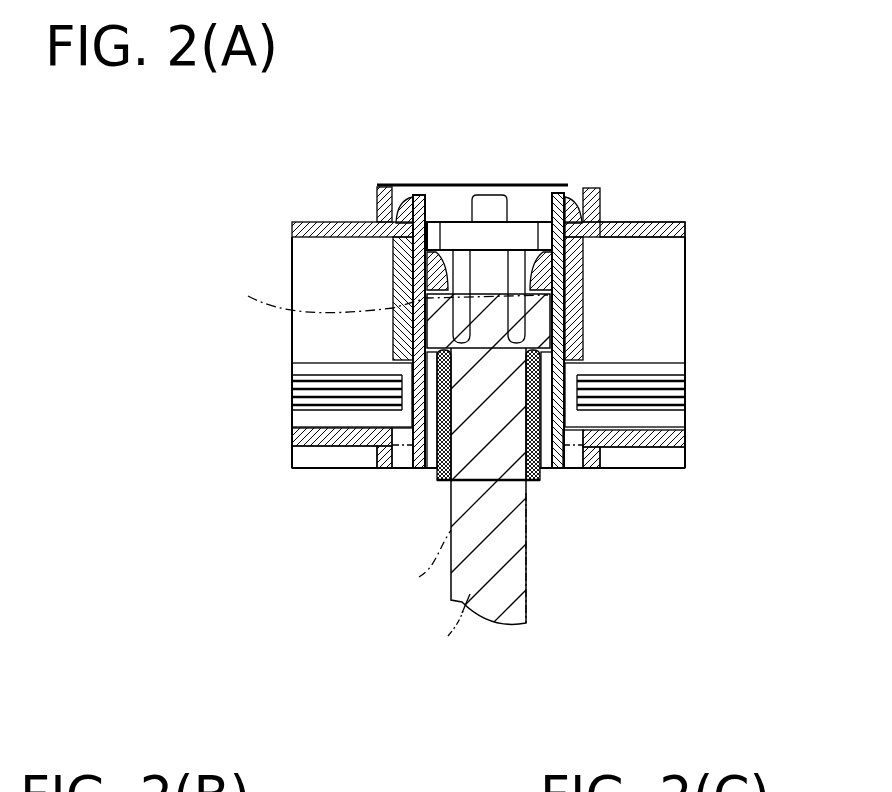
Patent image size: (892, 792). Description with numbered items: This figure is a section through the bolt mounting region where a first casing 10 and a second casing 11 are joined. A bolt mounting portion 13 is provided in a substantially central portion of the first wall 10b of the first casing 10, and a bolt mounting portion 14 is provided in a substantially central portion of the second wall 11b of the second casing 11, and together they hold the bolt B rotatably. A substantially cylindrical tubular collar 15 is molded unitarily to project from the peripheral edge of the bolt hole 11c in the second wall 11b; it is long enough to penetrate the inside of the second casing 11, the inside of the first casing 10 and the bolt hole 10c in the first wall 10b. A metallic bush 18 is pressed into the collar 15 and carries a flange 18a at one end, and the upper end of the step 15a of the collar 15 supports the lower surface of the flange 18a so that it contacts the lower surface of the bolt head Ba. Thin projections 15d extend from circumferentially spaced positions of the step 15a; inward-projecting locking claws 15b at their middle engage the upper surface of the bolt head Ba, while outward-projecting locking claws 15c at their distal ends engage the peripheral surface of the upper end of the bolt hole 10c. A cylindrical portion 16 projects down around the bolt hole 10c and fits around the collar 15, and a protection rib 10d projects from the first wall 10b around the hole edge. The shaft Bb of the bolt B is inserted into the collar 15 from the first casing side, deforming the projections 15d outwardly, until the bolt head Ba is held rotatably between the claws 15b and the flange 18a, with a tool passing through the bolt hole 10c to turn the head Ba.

The first casing 10 is at (685, 227).
The first wall 10b is at (640, 222).
The bolt hole 10c is at (577, 198).
The protection rib 10d is at (377, 212).
The second casing 11 is at (687, 437).
The second wall 11b is at (648, 452).
The bolt hole 11c is at (575, 460).
The bolt mounting portion 13 is at (558, 185).
The bolt mounting portion 14 is at (531, 486).
The collar 15 is at (419, 468).
The step 15a is at (549, 475).
The inward-projecting locking claws 15b is at (453, 250).
The outward-projecting locking claws 15c is at (397, 186).
The thin projections 15d is at (400, 325).
The cylindrical portion 16 is at (393, 266).
The metallic bush 18 is at (413, 447).
The flange 18a is at (585, 342).
The bolt B is at (427, 561).
The bolt head Ba is at (387, 297).
The bolt shaft Bb is at (444, 633).